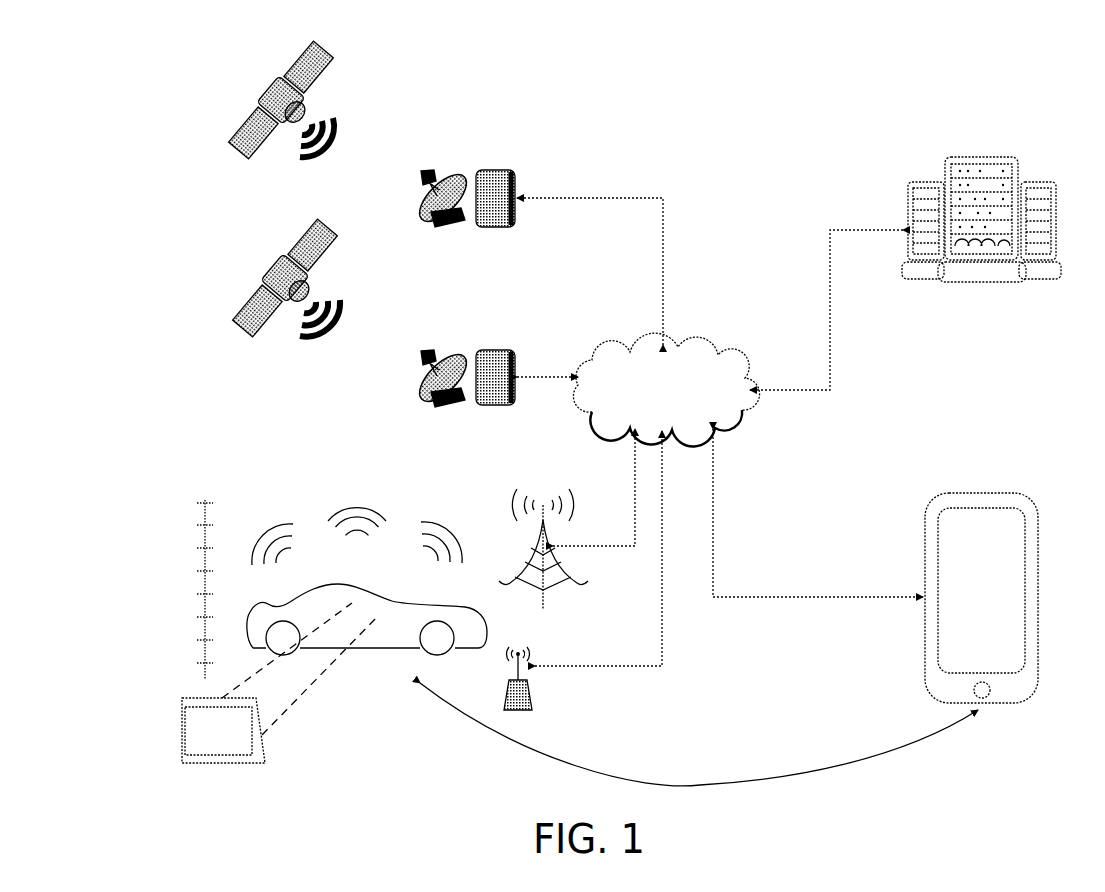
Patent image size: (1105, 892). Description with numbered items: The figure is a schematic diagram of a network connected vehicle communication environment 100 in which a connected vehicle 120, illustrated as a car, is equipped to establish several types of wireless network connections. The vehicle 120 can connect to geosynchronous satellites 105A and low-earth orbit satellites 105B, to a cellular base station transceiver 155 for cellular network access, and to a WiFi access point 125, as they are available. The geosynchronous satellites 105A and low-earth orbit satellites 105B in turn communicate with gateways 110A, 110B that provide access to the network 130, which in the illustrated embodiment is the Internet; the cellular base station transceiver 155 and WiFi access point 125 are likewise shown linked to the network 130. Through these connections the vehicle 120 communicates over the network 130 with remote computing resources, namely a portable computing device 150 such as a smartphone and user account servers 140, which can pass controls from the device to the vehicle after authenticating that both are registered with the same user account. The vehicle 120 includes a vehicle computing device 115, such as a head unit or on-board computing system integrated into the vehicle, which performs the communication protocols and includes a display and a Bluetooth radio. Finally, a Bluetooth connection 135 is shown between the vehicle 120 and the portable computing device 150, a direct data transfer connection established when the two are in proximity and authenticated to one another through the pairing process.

The network connected vehicle communication environment 100 is at (130, 78).
The geosynchronous satellites 105A is at (262, 92).
The low-earth orbit satellites 105B is at (272, 268).
The gateway 110A is at (516, 182).
The gateway 110B is at (515, 400).
The vehicle computing device 115 is at (280, 683).
The connected vehicle 120 is at (248, 632).
The WiFi access point 125 is at (530, 705).
The network 130 is at (666, 389).
The Bluetooth connection 135 is at (893, 752).
The user account servers 140 is at (981, 246).
The portable computing device 150 is at (1040, 640).
The cellular base station transceiver 155 is at (562, 588).